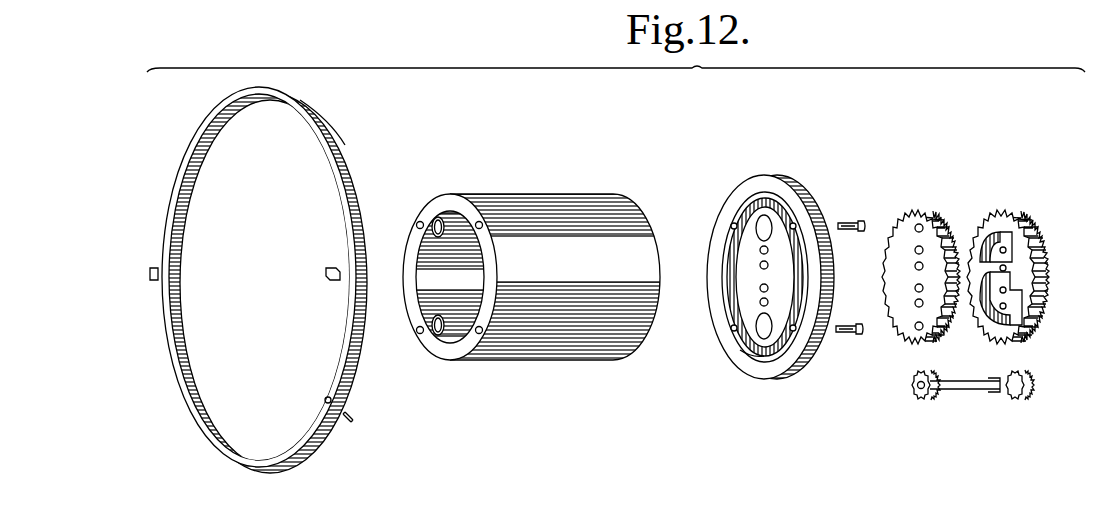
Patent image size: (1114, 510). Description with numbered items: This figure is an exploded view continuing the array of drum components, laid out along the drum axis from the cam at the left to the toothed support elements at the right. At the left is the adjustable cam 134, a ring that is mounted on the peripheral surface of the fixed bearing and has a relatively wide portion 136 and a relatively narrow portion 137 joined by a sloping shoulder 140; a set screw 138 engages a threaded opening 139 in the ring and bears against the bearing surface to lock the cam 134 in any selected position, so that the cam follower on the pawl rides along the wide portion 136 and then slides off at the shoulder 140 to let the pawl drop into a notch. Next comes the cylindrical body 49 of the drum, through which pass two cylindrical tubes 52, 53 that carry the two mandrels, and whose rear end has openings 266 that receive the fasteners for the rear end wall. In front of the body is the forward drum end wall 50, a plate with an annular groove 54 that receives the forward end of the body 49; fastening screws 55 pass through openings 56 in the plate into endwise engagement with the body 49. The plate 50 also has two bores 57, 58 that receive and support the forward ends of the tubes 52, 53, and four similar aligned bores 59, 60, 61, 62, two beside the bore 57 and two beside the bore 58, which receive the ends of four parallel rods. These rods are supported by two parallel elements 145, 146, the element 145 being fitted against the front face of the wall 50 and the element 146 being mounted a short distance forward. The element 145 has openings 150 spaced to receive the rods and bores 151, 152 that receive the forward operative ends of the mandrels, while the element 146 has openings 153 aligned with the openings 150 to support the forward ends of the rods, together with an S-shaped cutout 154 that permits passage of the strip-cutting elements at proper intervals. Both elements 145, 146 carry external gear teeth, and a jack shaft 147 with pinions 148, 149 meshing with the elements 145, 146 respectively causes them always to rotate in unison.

The adjustable cam 134 is at (281, 475).
The relatively narrow portion 137 is at (340, 138).
The sloping shoulder 140 is at (330, 270).
The relatively wide portion 136 is at (330, 342).
The threaded opening 139 is at (332, 398).
The set screw 138 is at (352, 421).
The cylindrical body 49 is at (563, 358).
The openings 266 is at (417, 223).
The cylindrical tube 52 is at (446, 214).
The cylindrical tube 53 is at (454, 332).
The drum end wall 50 is at (761, 387).
The openings 56 is at (731, 224).
The bore 57 is at (760, 214).
The annular groove 54 is at (769, 210).
The bore 59 is at (760, 249).
The bore 60 is at (760, 265).
The bore 61 is at (760, 289).
The bore 62 is at (760, 304).
The bore 58 is at (746, 354).
The fastening screws 55 is at (850, 222).
The parallel element 145 is at (946, 216).
The bore 151 is at (919, 222).
The openings 150 is at (914, 302).
The bore 152 is at (916, 330).
The parallel element 146 is at (1036, 216).
The openings 153 is at (1006, 268).
The S-shaped cutout 154 is at (1018, 318).
The jack shaft 147 is at (965, 391).
The pinion 148 is at (916, 398).
The pinion 149 is at (1012, 398).